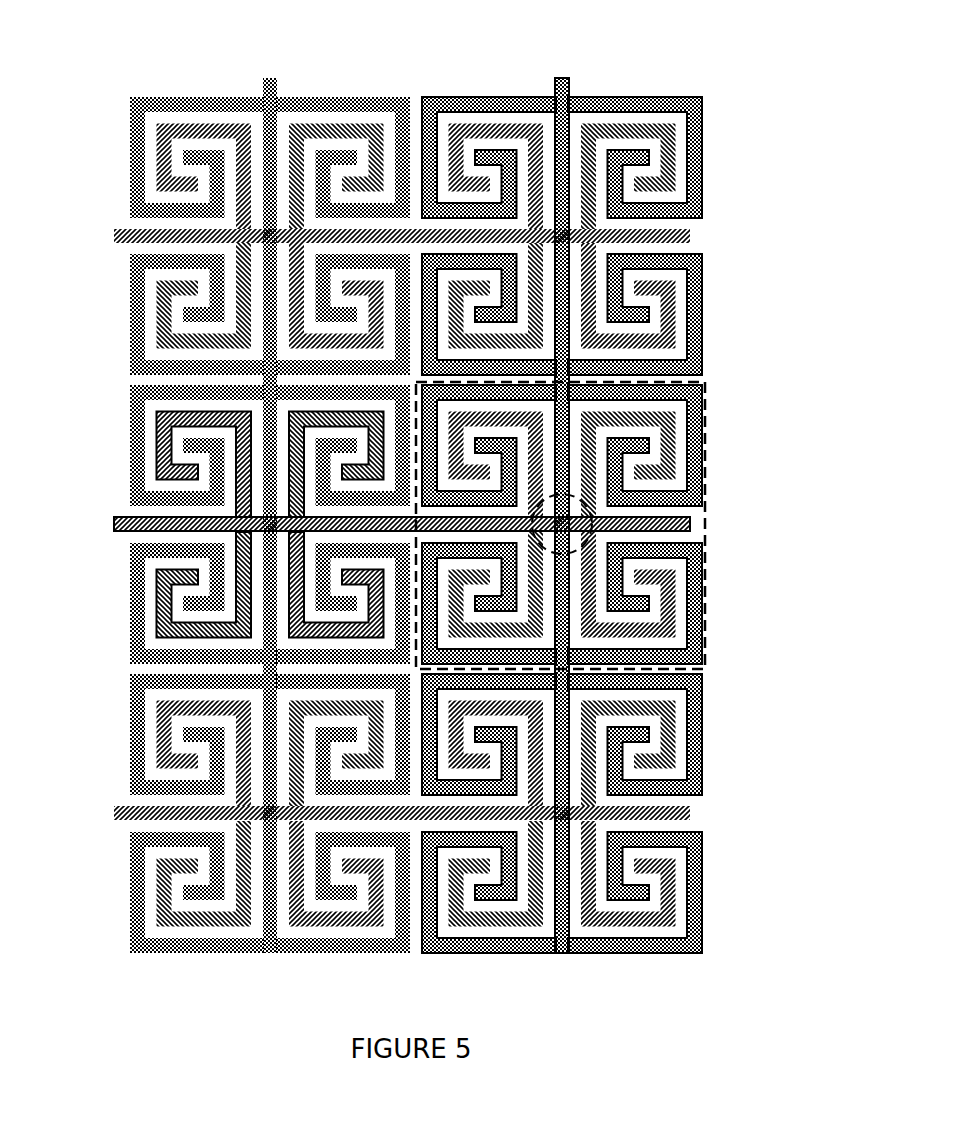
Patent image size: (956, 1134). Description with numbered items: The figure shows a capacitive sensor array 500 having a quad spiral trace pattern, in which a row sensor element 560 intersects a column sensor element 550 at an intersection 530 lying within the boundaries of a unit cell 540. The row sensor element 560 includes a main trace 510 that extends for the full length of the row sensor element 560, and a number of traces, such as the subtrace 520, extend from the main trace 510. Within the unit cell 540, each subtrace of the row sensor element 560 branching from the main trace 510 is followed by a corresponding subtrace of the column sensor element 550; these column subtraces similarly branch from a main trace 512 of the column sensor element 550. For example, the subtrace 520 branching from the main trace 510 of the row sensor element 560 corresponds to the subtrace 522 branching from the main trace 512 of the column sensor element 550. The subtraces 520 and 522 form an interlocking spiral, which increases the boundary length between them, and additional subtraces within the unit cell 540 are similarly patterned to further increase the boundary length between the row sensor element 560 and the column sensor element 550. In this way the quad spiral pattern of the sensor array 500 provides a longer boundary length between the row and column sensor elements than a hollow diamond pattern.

The capacitive sensor array 500 is at (439, 529).
The main trace 510 is at (694, 527).
The main trace 512 is at (568, 631).
The subtrace 520 is at (680, 578).
The subtrace 522 is at (710, 657).
The intersection 530 is at (601, 526).
The unit cell 540 is at (711, 397).
The column sensor element 550 is at (622, 476).
The row sensor element 560 is at (432, 544).